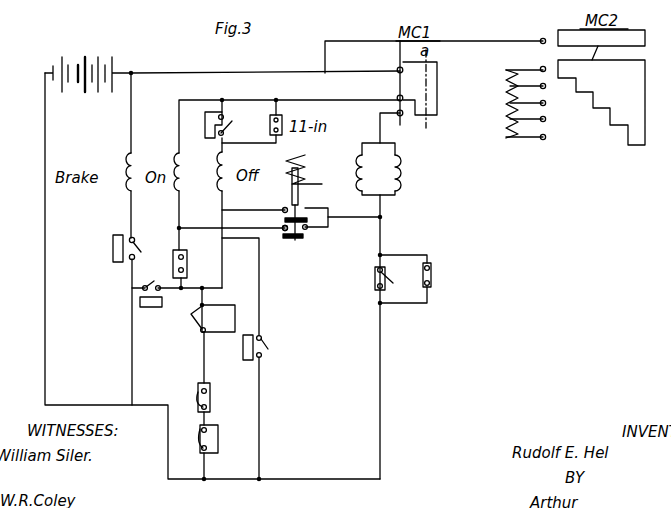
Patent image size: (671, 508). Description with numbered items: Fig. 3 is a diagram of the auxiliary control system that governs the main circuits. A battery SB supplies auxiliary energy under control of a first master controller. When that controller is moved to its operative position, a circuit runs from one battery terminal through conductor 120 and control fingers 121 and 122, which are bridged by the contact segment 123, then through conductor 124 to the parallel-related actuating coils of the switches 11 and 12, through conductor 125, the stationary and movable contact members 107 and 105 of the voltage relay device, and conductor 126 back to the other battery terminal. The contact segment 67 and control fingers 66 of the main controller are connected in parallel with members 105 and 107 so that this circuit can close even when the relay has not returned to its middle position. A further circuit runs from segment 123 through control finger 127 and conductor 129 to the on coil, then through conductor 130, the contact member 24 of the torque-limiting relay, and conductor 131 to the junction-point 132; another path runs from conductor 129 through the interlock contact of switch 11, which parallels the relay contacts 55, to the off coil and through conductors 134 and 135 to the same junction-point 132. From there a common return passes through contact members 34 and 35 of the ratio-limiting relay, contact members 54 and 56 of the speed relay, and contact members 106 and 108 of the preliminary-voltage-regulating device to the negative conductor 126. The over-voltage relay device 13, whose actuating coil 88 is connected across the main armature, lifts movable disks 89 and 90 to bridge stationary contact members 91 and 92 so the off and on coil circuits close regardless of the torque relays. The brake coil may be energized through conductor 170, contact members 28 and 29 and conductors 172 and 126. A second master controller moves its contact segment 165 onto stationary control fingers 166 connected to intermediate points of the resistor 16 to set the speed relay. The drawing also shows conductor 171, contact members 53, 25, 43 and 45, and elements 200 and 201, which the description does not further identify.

The battery SB is at (88, 67).
The conductor 120 is at (167, 72).
The conductor 126 is at (45, 243).
The conductor 170 is at (132, 126).
The brake relay conductor 171 is at (131, 221).
The conductor 172 is at (132, 360).
The contact member 28 is at (113, 250).
The contact member 29 is at (136, 243).
The conductor 129 is at (247, 99).
The contact block 53 is at (206, 124).
The relay contacts 55 is at (228, 128).
The actuating coil 88 is at (305, 155).
The over-voltage relay device 13 is at (284, 201).
The conductor 134 is at (228, 208).
The conductor 130 is at (179, 222).
The conductor 135 is at (255, 221).
The movable disk 89 is at (285, 223).
The movable disk 90 is at (303, 236).
The stationary contact members 92 is at (283, 232).
The stationary contact members 91 is at (307, 207).
The conductor 124 is at (380, 138).
The switch 11 is at (358, 166).
The switch 12 is at (399, 166).
The conductor 125 is at (380, 209).
The control finger 121 is at (398, 69).
The control finger 127 is at (398, 97).
The control finger 122 is at (399, 112).
The contact segment 123 is at (437, 78).
The movable contact member 105 is at (375, 286).
The stationary contact member 107 is at (388, 279).
The contact segment 67 is at (430, 268).
The control fingers 66 is at (430, 283).
The contact 25 is at (185, 257).
The contact member 24 is at (185, 271).
The conductor 131 is at (187, 282).
The switch 201 is at (177, 279).
The resistance 200 is at (153, 307).
The junction-point 132 is at (200, 292).
The contact member 35 is at (200, 317).
The contact member 34 is at (229, 333).
The contact block 43 is at (243, 352).
The switch 45 is at (267, 345).
The contact member 54 is at (217, 404).
The contact member 56 is at (198, 392).
The contact member 106 is at (218, 438).
The contact member 108 is at (185, 438).
The movable contact segment 165 is at (601, 102).
The resistor 16 is at (504, 118).
The stationary control fingers 166 is at (546, 104).